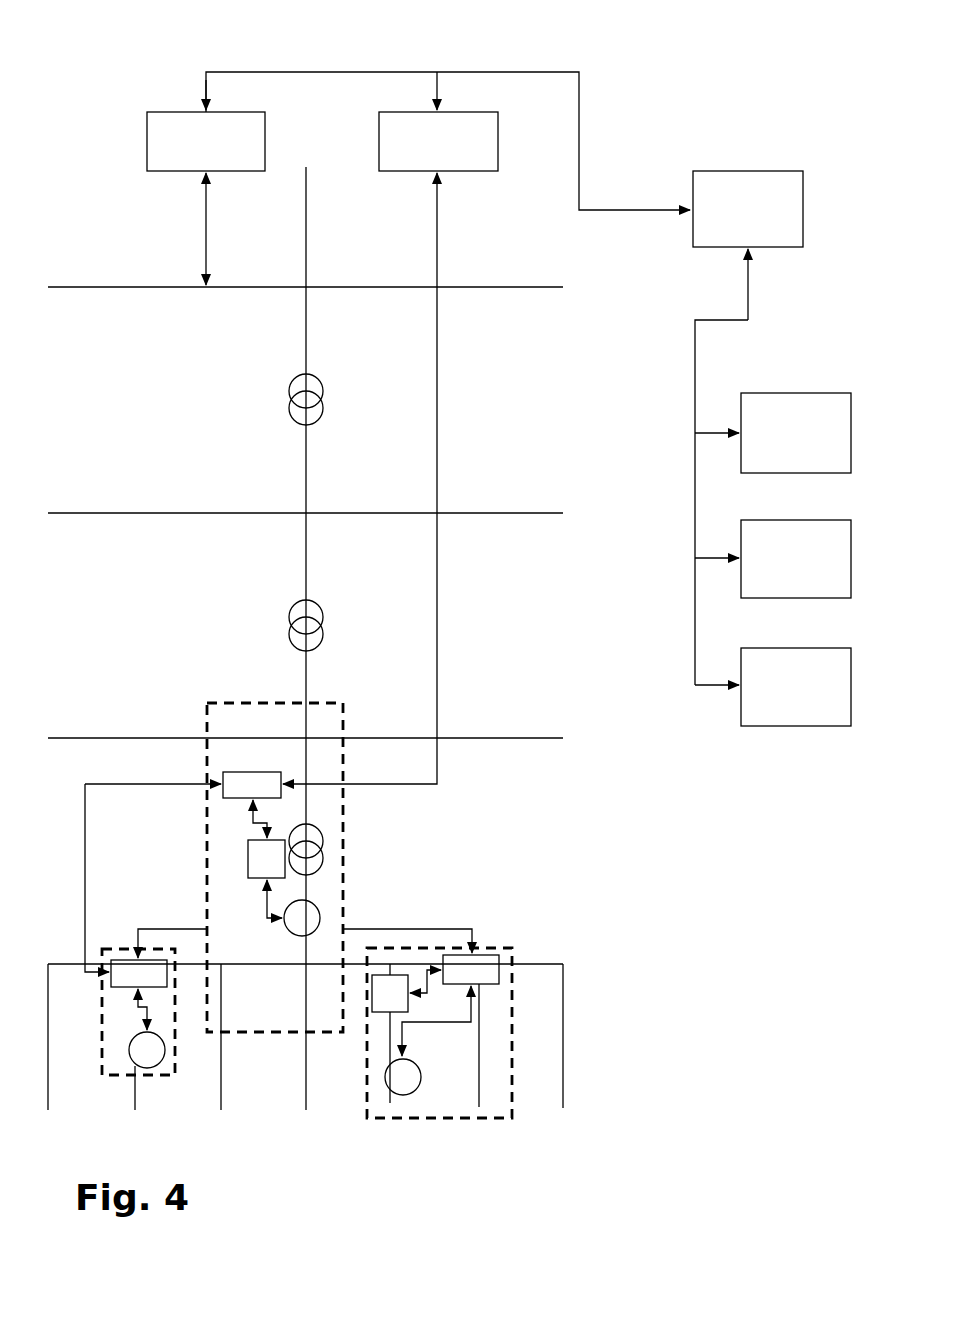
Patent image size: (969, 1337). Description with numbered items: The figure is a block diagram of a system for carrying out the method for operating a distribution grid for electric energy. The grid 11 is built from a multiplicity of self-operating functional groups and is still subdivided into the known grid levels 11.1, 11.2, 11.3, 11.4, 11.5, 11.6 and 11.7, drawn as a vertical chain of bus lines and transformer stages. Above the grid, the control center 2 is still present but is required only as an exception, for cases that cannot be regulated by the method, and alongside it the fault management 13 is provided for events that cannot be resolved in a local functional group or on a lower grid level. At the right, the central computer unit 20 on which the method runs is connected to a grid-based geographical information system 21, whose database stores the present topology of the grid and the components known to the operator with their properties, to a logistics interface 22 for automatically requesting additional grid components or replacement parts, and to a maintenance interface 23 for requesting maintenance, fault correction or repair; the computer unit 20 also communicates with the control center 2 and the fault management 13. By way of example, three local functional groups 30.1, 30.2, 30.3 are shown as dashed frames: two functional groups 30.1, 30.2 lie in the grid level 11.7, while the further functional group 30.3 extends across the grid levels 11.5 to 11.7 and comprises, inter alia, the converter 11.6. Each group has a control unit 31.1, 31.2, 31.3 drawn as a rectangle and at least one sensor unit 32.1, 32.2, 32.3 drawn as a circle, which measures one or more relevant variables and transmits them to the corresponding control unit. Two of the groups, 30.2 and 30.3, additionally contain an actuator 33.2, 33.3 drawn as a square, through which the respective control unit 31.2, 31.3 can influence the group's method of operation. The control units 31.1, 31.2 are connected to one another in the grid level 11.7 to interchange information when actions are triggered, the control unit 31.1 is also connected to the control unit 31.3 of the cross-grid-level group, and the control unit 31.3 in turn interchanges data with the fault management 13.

The grid 11 is at (108, 80).
The control center 2 is at (206, 141).
The fault management 13 is at (438, 141).
The central computer unit 20 is at (748, 209).
The grid-based geographical information system 21 is at (796, 433).
The logistics interface 22 is at (796, 559).
The maintenance interface 23 is at (796, 687).
The grid level 11.1 is at (548, 284).
The grid level 11.2 is at (326, 407).
The grid level 11.3 is at (548, 510).
The grid level 11.4 is at (326, 633).
The grid level 11.5 is at (548, 735).
The converter 11.6 is at (325, 860).
The grid level 11.7 is at (548, 961).
The local functional group 30.1 is at (120, 1078).
The local functional group 30.2 is at (463, 1123).
The cross-grid-level local functional group 30.3 is at (207, 717).
The control unit 31.1 is at (130, 970).
The control unit 31.2 is at (490, 968).
The control unit 31.3 is at (240, 782).
The sensor unit 32.1 is at (150, 1053).
The sensor unit 32.2 is at (405, 1082).
The sensor unit 32.3 is at (322, 916).
The actuator 33.2 is at (388, 995).
The actuator 33.3 is at (258, 862).